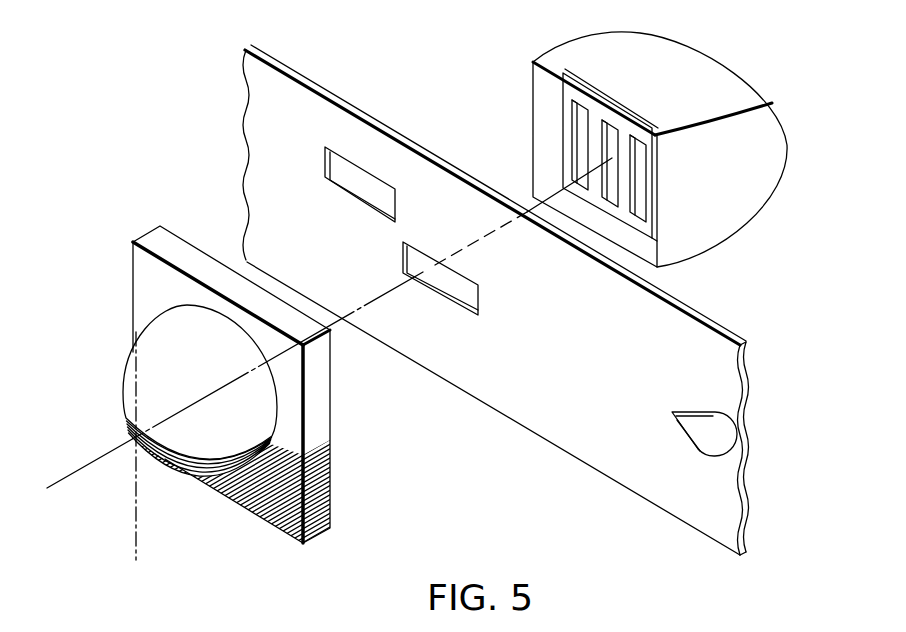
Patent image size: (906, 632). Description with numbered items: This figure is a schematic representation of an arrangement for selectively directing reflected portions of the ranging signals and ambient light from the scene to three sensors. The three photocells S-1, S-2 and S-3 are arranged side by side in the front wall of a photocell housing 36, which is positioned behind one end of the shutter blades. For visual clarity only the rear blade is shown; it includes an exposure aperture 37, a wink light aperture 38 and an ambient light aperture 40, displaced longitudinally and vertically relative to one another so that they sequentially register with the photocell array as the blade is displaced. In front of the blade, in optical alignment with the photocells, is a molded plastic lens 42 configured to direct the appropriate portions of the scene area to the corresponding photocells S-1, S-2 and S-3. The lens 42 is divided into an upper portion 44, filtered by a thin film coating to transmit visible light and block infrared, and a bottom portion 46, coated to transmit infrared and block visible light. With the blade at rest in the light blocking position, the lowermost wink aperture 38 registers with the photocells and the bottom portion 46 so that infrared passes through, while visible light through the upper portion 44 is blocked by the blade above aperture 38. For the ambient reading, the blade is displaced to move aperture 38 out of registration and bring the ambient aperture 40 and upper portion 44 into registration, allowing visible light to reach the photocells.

The photocell housing 36 is at (676, 58).
The exposure aperture 37 is at (703, 433).
The wink light aperture 38 is at (465, 292).
The ambient light aperture 40 is at (391, 195).
The molded plastic lens 42 is at (175, 231).
The upper portion 44 is at (322, 355).
The bottom portion 46 is at (322, 475).
The photocell S-1 is at (640, 151).
The photocell S-2 is at (607, 127).
The photocell S-3 is at (575, 117).